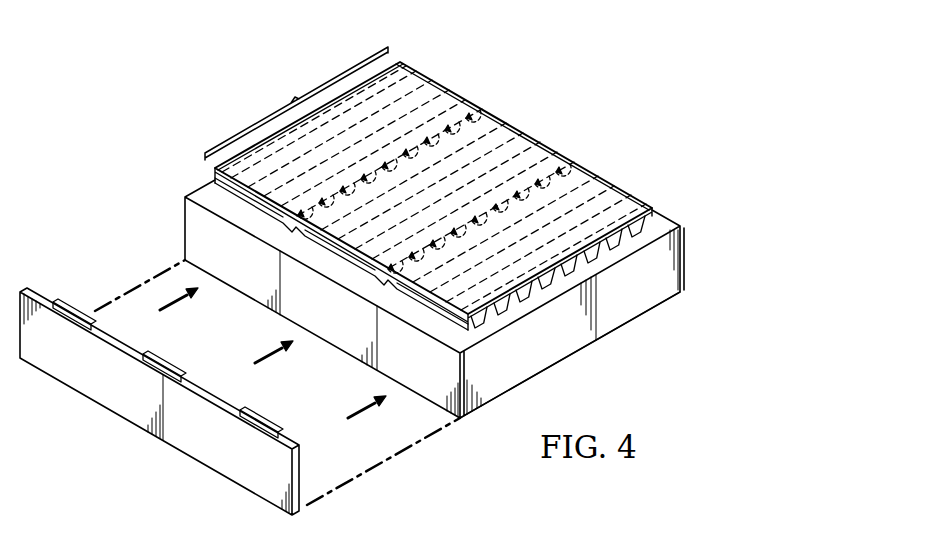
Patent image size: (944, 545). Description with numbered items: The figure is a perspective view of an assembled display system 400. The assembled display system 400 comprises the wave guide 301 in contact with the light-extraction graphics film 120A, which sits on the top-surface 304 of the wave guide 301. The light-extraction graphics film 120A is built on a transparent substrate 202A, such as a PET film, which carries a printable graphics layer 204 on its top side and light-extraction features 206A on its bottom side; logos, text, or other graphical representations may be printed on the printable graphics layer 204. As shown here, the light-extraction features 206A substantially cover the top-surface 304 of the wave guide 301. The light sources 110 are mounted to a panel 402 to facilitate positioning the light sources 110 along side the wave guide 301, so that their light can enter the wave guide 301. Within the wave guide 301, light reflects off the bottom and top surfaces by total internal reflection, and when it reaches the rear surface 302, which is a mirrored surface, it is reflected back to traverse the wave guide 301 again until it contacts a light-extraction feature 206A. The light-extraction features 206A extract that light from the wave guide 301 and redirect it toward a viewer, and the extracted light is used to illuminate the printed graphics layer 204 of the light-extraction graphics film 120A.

The assembled display system 400 is at (653, 66).
The light-extraction graphics film 120A is at (296, 103).
The top-surface 304 is at (201, 195).
The printable graphics layer 204 is at (478, 119).
The transparent substrate 202A is at (654, 207).
The light-extraction features 206A is at (665, 222).
The rear surface 302 is at (681, 258).
The wave guide 301 is at (577, 360).
The light sources 110 is at (76, 308).
The panel 402 is at (187, 454).